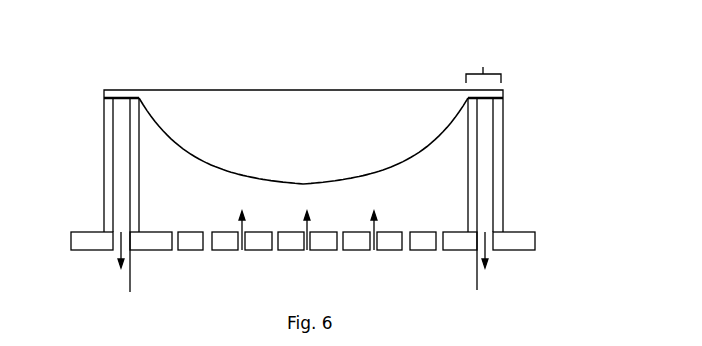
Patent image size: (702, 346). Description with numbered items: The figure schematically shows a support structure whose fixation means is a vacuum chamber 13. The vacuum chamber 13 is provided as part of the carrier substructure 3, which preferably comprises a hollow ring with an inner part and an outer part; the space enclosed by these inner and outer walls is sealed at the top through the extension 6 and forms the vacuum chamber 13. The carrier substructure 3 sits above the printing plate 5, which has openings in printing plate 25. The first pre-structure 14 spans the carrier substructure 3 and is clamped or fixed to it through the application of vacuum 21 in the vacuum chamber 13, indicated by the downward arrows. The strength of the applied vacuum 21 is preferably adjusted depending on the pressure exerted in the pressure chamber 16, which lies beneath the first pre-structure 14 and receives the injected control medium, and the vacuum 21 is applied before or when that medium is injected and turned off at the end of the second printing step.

The vacuum chamber 13 is at (123, 111).
The first pre-structure 14 is at (202, 131).
The carrier substructure 3 is at (108, 172).
The extension 6 is at (483, 48).
The pressure chamber 16 is at (445, 192).
The printing plate 5 is at (95, 240).
The openings in printing plate 25 is at (177, 252).
The application of vacuum 21 is at (303, 263).